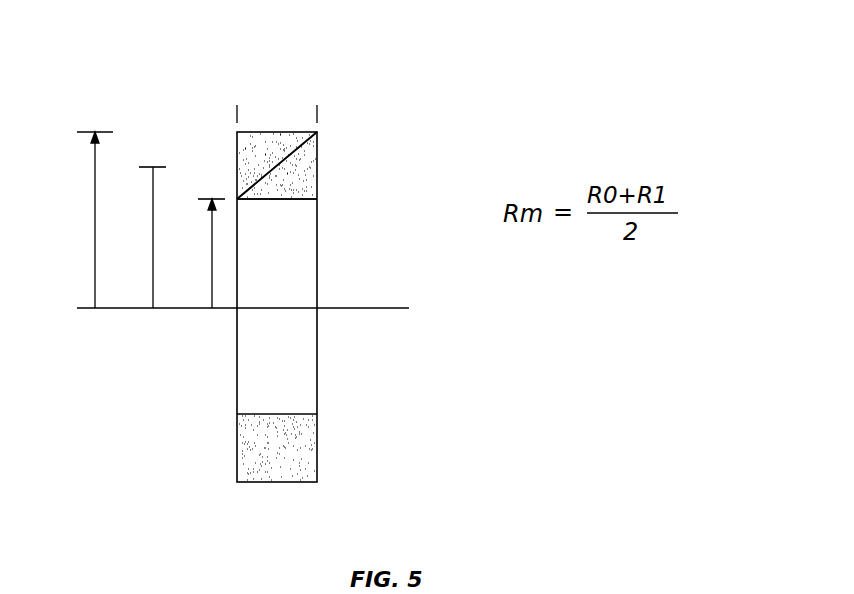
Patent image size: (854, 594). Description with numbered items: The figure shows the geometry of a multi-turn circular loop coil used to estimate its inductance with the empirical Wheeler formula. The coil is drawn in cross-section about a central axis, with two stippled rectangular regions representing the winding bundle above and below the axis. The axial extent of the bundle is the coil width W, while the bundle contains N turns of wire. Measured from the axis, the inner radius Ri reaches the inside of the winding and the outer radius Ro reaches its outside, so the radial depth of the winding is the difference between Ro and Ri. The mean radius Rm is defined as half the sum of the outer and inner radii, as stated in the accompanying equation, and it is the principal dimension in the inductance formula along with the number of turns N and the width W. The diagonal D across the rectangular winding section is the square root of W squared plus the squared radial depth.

The coil width W is at (317, 113).
The number of turns N is at (305, 160).
The winding cross-section diagonal D is at (303, 186).
The outer radius Ro is at (78, 220).
The mean radius Rm is at (137, 237).
The inner radius Ri is at (201, 253).